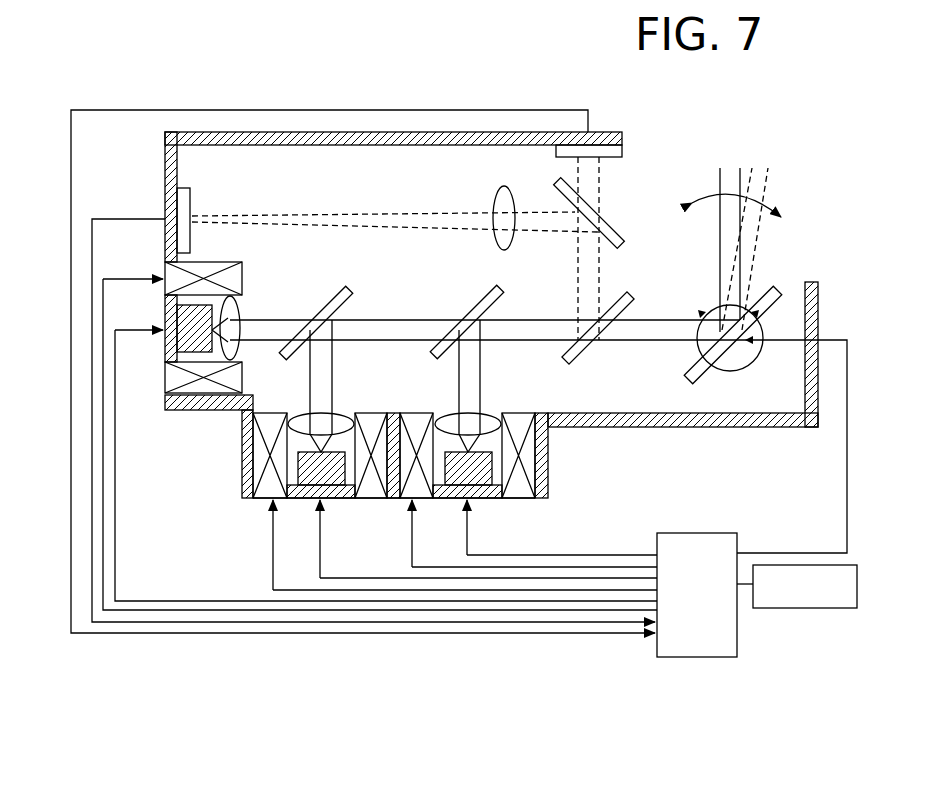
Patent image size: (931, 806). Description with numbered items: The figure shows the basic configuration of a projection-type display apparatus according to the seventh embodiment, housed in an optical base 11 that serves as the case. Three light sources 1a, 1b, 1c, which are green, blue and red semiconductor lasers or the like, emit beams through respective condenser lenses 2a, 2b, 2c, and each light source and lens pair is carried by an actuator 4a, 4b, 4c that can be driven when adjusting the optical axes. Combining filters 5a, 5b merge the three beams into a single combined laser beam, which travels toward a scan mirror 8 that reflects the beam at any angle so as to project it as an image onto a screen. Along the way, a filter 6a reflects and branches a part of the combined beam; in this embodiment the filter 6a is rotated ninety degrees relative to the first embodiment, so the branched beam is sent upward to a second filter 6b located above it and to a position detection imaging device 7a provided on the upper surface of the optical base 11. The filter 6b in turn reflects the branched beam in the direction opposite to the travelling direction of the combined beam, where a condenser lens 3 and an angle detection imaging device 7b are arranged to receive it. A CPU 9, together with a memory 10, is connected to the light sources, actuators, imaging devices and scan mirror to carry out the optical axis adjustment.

The optical base 11 is at (420, 127).
The angle detection imaging device 7b is at (190, 192).
The position detection imaging device 7a is at (612, 158).
The condenser lens 3 is at (493, 203).
The filter for reflecting/branching laser beams 6b is at (562, 184).
The light source 1a is at (165, 318).
The actuator 4a is at (240, 277).
The condenser lens 2a is at (240, 302).
The combining filter 5a is at (352, 295).
The combining filter 5b is at (500, 292).
The filter for reflecting/branching laser beams 6a is at (578, 357).
The scan mirror 8 is at (692, 370).
The actuator 4b is at (270, 414).
The condenser lens 2b is at (337, 412).
The light source 1b is at (333, 500).
The actuator 4c is at (418, 412).
The condenser lens 2c is at (487, 413).
The light source 1c is at (480, 502).
The CPU 9 is at (697, 658).
The memory 10 is at (808, 610).